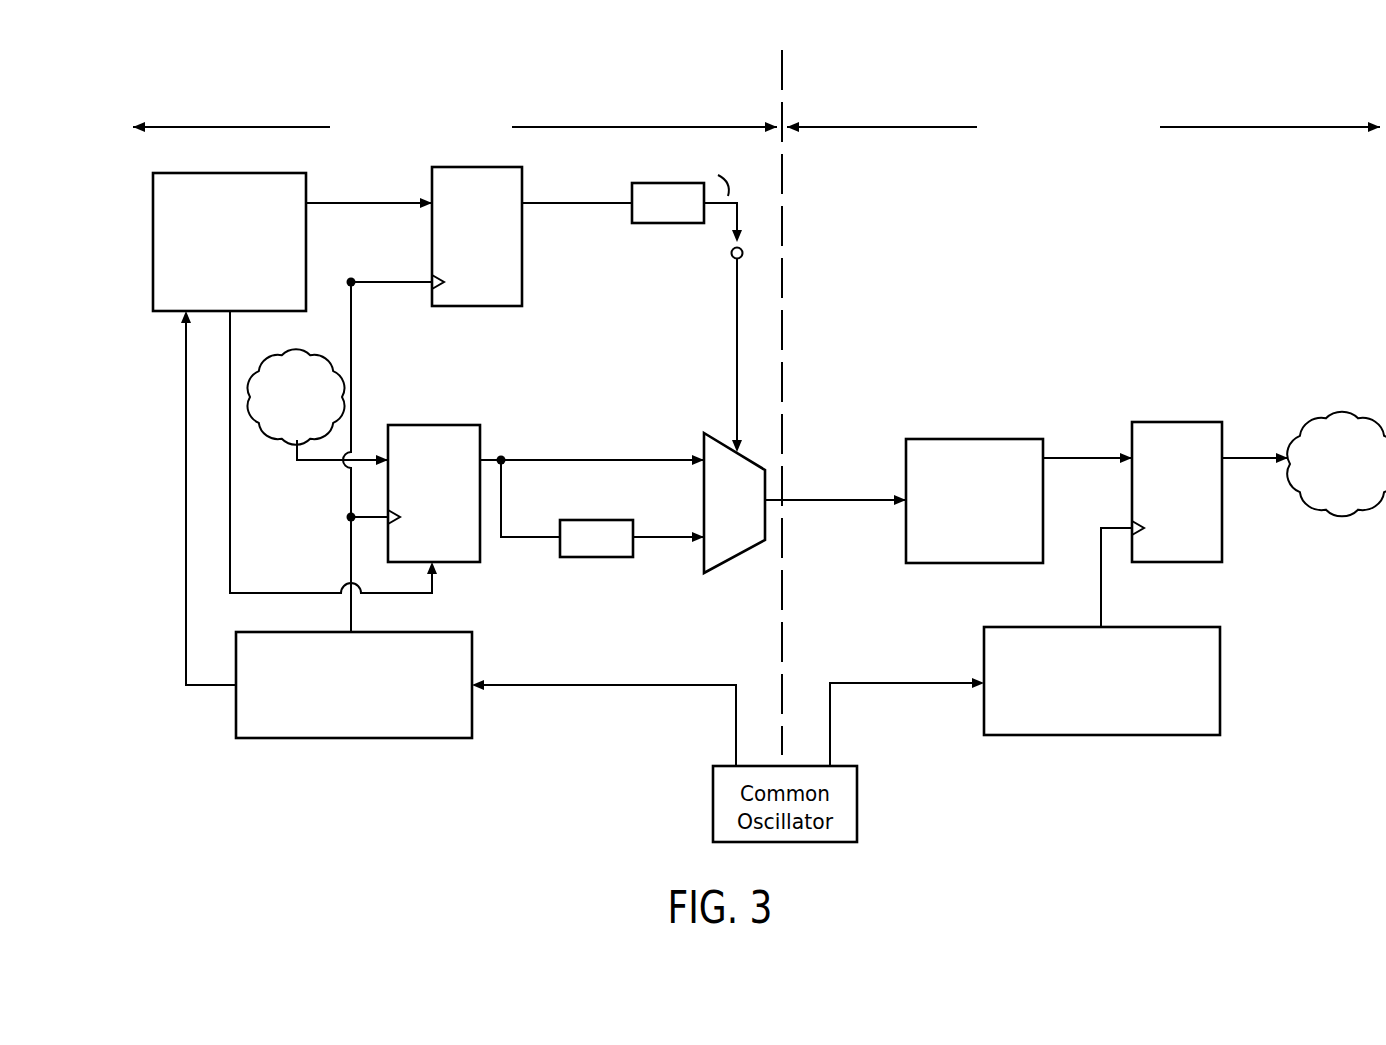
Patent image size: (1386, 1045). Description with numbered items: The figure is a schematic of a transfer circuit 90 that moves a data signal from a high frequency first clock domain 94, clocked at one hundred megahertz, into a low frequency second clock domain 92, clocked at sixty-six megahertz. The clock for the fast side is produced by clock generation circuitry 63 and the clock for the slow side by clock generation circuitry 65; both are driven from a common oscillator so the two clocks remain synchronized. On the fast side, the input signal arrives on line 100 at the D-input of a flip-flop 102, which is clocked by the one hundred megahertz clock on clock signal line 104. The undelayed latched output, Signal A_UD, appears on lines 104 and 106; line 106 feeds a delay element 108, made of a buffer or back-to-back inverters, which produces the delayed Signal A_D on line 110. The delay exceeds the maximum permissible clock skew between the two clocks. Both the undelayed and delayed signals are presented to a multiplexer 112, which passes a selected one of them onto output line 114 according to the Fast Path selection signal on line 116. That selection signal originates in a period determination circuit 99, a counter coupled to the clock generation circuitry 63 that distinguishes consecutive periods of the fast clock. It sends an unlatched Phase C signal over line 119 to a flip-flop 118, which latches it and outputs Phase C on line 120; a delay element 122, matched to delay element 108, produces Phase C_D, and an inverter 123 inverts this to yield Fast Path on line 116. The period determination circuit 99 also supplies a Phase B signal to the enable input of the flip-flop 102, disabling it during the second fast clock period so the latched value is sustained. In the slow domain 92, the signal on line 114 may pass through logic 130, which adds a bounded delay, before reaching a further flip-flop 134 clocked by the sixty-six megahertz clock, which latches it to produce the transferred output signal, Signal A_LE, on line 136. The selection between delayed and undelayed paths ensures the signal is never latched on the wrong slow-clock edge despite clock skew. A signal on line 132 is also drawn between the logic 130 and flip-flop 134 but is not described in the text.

The 100 MHz clock generation circuitry 63 is at (342, 742).
The 66 MHz clock generation circuitry 65 is at (1147, 737).
The transfer circuit 90 is at (1096, 850).
The second clock domain 92 is at (1288, 82).
The first clock domain 94 is at (592, 82).
The period determination circuit 99 is at (212, 172).
The input signal line 100 is at (313, 463).
The flip-flop 102 is at (437, 425).
The clock signal line 104 is at (590, 457).
The line 106 is at (503, 498).
The delay element 108 is at (596, 560).
The line 110 is at (662, 543).
The multiplexer 112 is at (716, 433).
The output line 114 is at (830, 500).
The line 116 is at (735, 296).
The flip-flop 118 is at (478, 308).
The line 119 is at (318, 196).
The line 120 is at (566, 205).
The delay element 122 is at (651, 225).
The inverter 123 is at (735, 217).
The logic 130 is at (952, 437).
The logic output 132 is at (1077, 455).
The flip-flop 134 is at (1178, 420).
The line 136 is at (1252, 466).